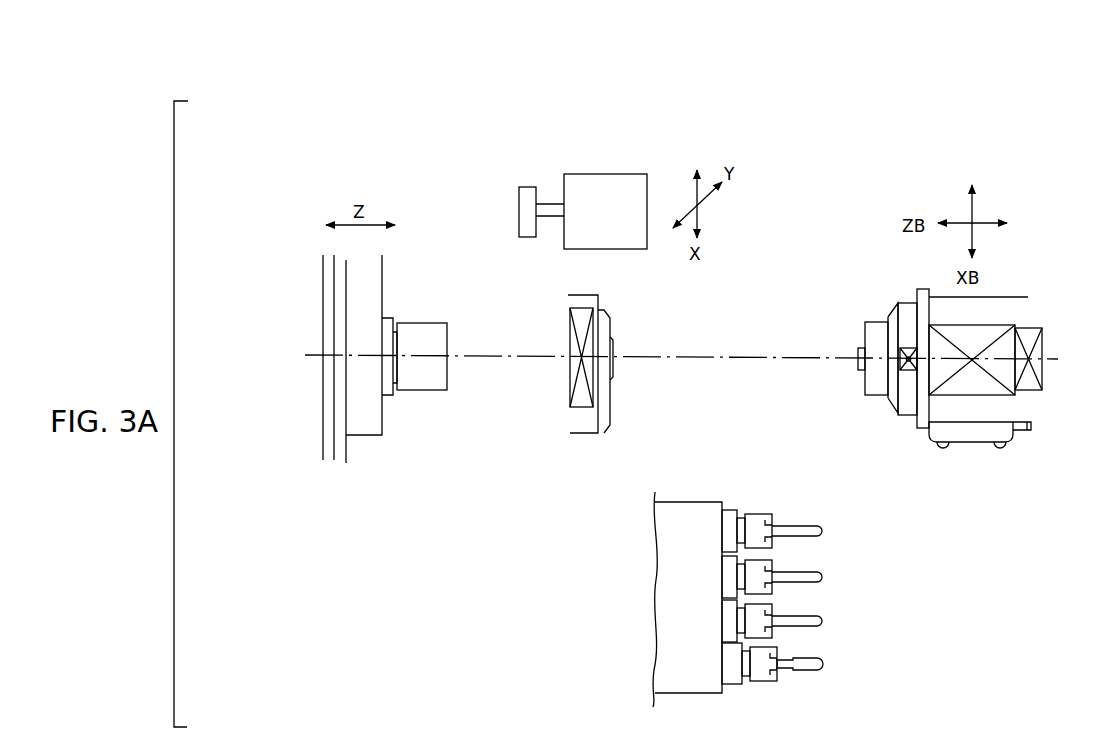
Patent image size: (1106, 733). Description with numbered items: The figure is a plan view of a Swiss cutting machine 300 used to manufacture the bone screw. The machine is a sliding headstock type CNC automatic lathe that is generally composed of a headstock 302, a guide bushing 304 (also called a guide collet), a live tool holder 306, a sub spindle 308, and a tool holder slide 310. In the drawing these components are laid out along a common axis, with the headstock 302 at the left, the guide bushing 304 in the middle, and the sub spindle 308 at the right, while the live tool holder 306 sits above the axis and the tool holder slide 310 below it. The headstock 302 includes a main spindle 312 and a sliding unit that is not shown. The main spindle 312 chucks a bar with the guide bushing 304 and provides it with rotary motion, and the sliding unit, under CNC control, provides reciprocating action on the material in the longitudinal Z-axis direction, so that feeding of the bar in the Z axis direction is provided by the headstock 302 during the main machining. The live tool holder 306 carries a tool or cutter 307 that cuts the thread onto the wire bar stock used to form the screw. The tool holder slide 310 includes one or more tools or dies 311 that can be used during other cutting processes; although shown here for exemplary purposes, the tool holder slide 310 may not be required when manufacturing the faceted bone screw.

The Swiss cutting machine 300 is at (882, 104).
The headstock 302 is at (322, 445).
The guide bushing 304 is at (608, 417).
The live tool holder 306 is at (611, 187).
The tool or cutter 307 is at (525, 207).
The sub spindle 308 is at (879, 393).
The tool holder slide 310 is at (668, 655).
The tools or dies 311 is at (823, 665).
The main spindle 312 is at (423, 385).